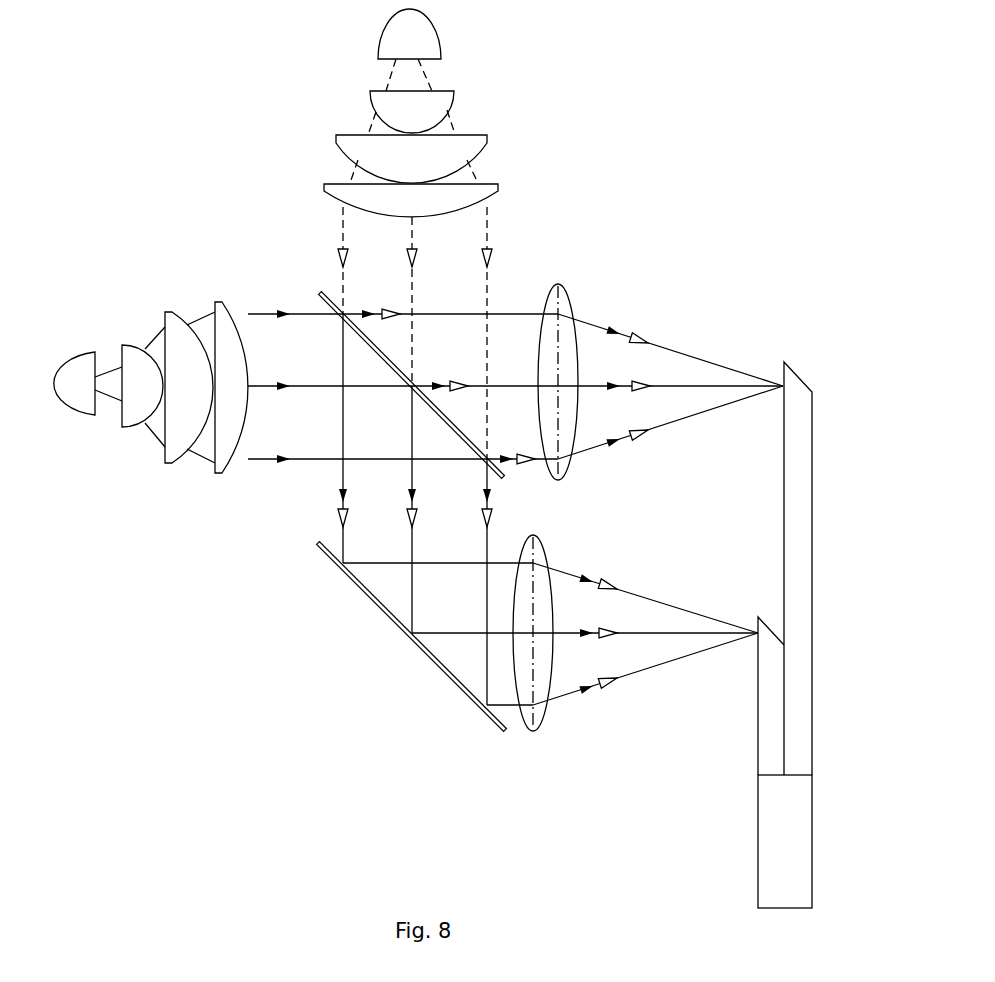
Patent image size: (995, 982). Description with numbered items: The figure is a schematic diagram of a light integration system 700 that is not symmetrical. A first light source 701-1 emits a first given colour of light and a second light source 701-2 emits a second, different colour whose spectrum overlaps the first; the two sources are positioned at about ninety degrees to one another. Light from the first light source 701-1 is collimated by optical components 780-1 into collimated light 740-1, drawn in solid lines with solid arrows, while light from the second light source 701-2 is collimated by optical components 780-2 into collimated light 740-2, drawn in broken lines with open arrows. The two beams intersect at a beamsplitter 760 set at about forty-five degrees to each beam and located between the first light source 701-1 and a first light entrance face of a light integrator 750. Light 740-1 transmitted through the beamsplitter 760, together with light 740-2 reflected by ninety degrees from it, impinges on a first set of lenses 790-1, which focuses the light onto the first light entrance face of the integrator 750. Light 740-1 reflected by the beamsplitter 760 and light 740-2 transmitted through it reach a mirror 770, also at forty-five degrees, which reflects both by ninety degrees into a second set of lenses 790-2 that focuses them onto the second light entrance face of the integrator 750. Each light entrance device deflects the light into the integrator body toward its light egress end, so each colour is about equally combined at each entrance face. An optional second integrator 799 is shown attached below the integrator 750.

The light integration system 700 is at (128, 811).
The first light source 701-1 is at (68, 406).
The second light source 701-2 is at (437, 30).
The optical components 780-1 is at (122, 452).
The optical components 780-2 is at (514, 152).
The collimated light 740-1 is at (328, 460).
The collimated light 740-2 is at (480, 222).
The beamsplitter 760 is at (503, 477).
The mirror 770 is at (378, 610).
The first set of lenses 790-1 is at (572, 463).
The second set of lenses 790-2 is at (540, 723).
The light integrator 750 is at (812, 703).
The second integrator 799 is at (759, 830).